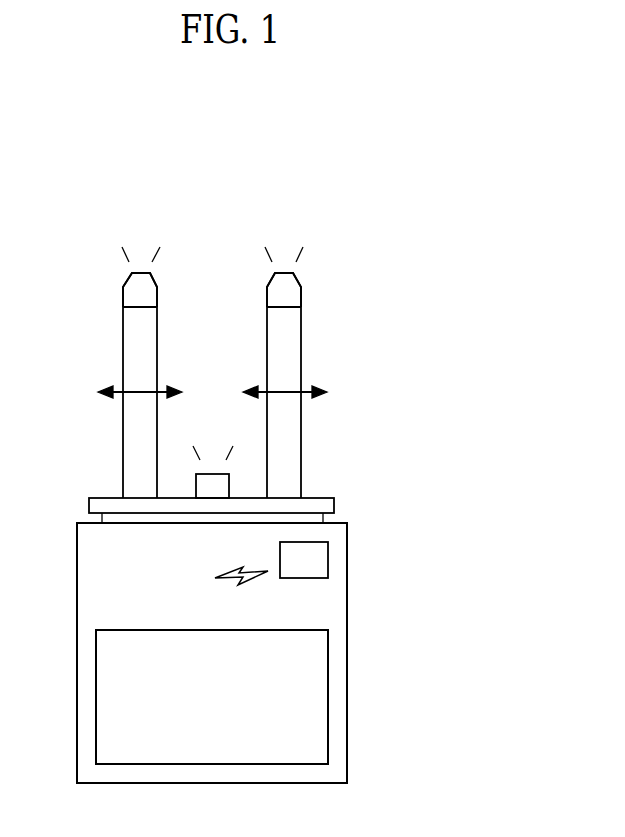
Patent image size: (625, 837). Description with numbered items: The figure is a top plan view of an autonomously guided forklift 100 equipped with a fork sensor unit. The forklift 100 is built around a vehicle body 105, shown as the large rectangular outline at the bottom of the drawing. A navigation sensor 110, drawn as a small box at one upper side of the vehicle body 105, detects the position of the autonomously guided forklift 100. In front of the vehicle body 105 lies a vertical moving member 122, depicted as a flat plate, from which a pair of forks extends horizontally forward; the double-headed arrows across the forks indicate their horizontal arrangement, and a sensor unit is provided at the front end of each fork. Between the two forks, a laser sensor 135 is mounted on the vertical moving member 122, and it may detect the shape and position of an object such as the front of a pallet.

The autonomously guided forklift 100 is at (366, 656).
The vehicle body 105 is at (322, 607).
The navigation sensor 110 is at (322, 560).
The vertical moving member 122 is at (327, 505).
The laser sensor 135 is at (222, 485).